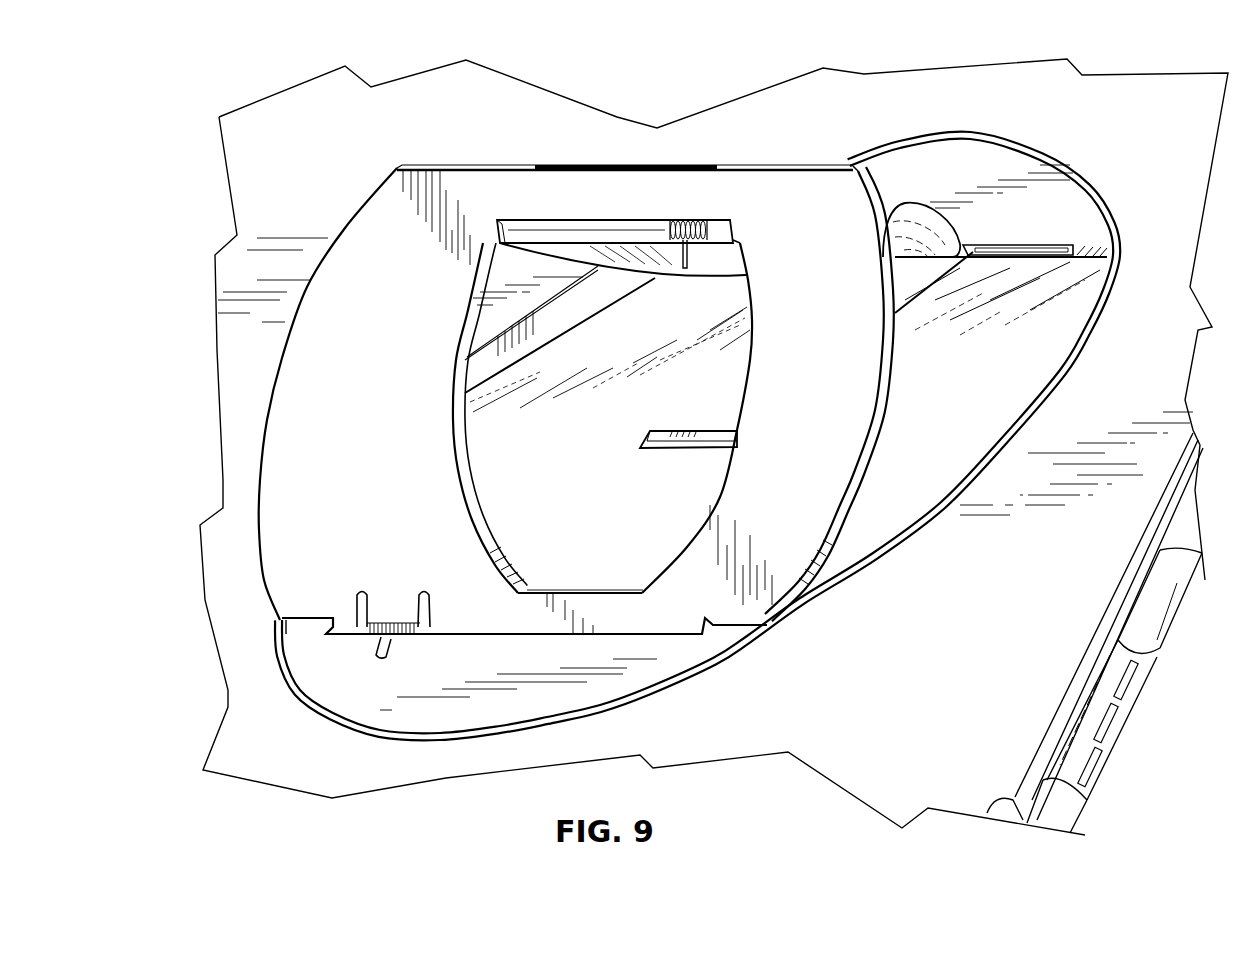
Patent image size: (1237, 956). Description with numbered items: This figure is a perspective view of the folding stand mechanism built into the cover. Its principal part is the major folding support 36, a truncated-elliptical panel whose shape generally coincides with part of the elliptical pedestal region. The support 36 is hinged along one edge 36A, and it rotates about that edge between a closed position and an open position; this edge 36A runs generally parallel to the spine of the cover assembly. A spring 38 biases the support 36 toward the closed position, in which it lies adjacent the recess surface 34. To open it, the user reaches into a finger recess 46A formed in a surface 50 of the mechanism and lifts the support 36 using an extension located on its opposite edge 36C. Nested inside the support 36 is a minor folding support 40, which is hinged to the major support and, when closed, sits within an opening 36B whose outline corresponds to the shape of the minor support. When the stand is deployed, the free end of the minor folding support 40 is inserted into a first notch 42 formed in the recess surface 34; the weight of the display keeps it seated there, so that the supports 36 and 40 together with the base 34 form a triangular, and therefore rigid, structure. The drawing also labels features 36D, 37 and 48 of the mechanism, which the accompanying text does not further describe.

The recess surface 34 is at (583, 478).
The major folding support 36 is at (835, 372).
The edge of major folding support 36A is at (678, 634).
The opening of major folding support 36B is at (463, 467).
The edge of major folding support 36C is at (487, 167).
The bezel outer wall 36D is at (875, 412).
The ledge 37 is at (448, 633).
The spring 38 is at (382, 622).
The minor folding support 40 is at (697, 270).
The first notch 42 is at (680, 450).
The finger recess 46A is at (907, 213).
The bottom plate 48 is at (430, 680).
The surface of the mechanism 50 is at (1057, 222).